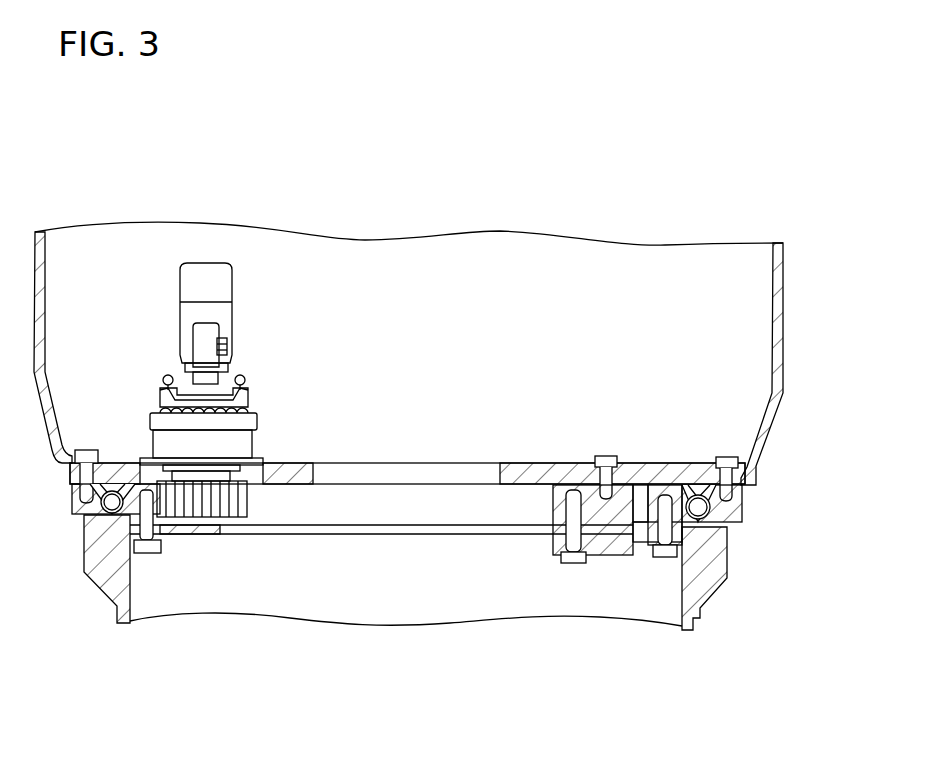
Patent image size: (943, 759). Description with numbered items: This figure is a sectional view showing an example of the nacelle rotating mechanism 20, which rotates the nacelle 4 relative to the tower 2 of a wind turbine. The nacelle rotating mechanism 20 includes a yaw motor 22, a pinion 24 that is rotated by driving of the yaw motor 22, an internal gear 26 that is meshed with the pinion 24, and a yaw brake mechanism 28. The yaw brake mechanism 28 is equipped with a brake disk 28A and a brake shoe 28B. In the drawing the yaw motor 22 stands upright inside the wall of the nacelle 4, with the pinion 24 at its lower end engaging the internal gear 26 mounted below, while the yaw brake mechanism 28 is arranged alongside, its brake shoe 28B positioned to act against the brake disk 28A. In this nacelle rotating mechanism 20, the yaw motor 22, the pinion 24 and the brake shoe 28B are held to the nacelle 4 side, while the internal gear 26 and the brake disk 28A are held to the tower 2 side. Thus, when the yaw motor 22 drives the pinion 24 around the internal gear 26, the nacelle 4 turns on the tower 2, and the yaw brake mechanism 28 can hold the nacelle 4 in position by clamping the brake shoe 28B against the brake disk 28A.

The tower 2 is at (713, 598).
The nacelle 4 is at (783, 298).
The nacelle rotating mechanism 20 is at (786, 474).
The yaw motor 22 is at (223, 318).
The pinion 24 is at (202, 517).
The internal gear 26 is at (117, 514).
The yaw brake mechanism 28 is at (505, 562).
The brake disk 28A is at (641, 535).
The brake shoe 28B is at (602, 557).